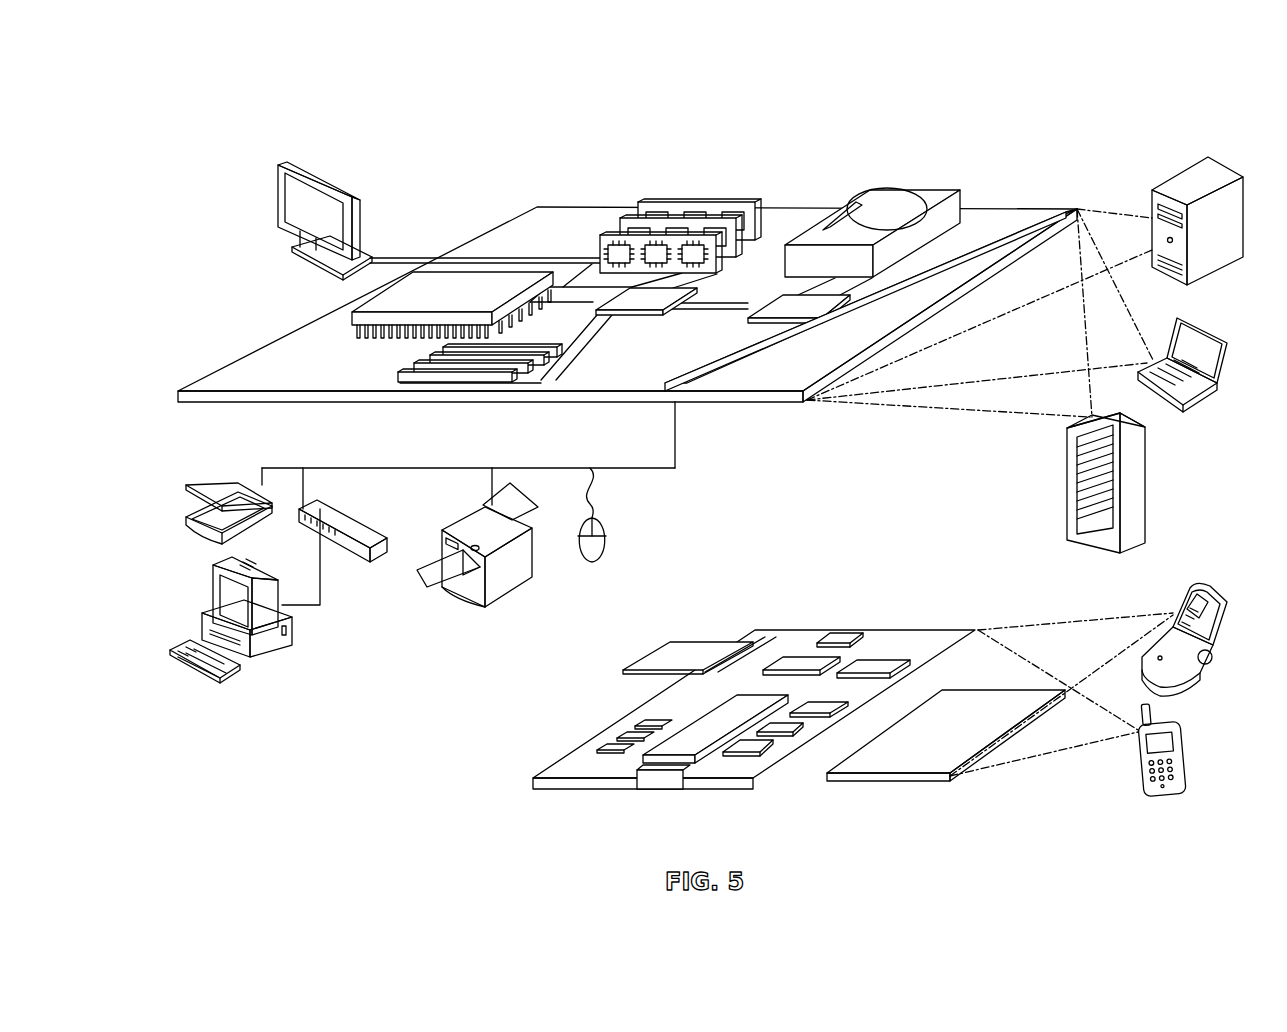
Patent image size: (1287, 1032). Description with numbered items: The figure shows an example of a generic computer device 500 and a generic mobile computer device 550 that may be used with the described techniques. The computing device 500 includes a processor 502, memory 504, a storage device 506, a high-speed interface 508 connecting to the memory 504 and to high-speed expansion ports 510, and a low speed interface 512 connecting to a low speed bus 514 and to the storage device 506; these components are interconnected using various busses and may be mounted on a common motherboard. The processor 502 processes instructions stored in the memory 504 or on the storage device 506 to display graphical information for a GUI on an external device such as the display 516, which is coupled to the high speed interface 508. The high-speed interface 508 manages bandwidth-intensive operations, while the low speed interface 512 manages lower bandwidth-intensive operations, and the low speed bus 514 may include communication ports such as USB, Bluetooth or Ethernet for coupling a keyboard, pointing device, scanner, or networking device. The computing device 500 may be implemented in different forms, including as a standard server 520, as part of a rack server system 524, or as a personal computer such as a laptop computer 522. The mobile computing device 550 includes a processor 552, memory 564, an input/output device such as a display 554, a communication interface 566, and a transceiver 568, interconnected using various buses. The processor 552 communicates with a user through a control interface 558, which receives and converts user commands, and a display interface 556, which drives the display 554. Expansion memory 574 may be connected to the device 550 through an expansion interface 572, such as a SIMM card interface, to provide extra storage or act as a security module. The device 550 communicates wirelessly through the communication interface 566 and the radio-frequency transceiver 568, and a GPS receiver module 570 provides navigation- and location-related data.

The generic computer device 500 is at (284, 76).
The processor 502 is at (355, 317).
The memory 504 is at (680, 208).
The storage device 506 is at (876, 192).
The high-speed interface 508 is at (648, 313).
The high-speed expansion ports 510 is at (425, 380).
The low speed interface 512 is at (778, 300).
The low speed bus 514 is at (688, 402).
The display 516 is at (283, 163).
The standard server 520 is at (1150, 203).
The laptop computer 522 is at (1215, 327).
The rack server system 524 is at (1066, 485).
The generic mobile computer device 550 is at (750, 715).
The processor 552 is at (690, 740).
The display 554 is at (895, 763).
The display interface 556 is at (740, 756).
The control interface 558 is at (775, 735).
The memory 564 is at (616, 737).
The communication interface 566 is at (800, 660).
The transceiver 568 is at (875, 665).
The GPS receiver module 570 is at (852, 634).
The expansion interface 572 is at (736, 641).
The expansion memory 574 is at (668, 641).